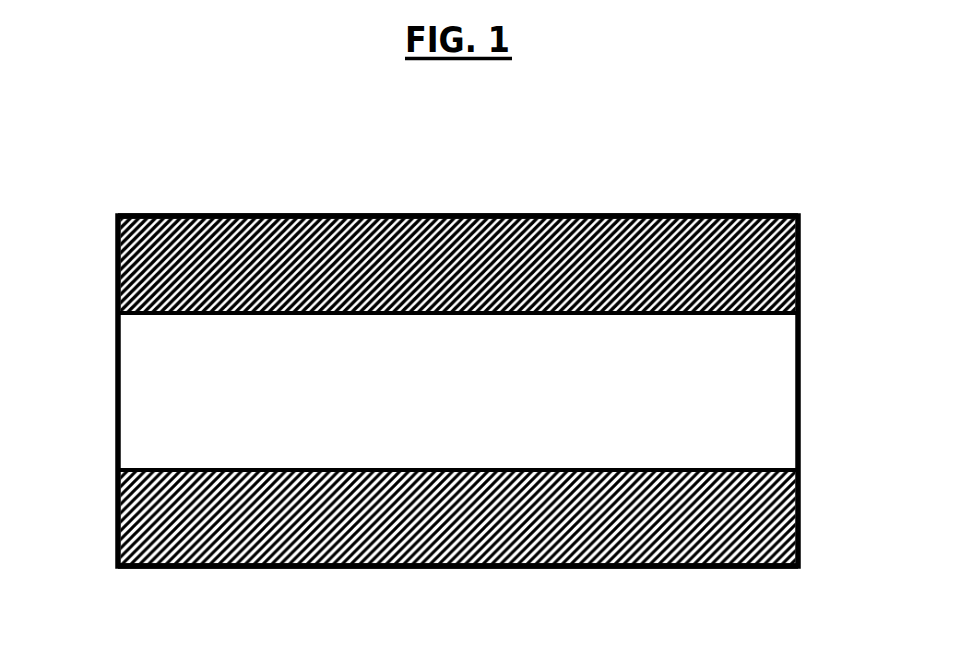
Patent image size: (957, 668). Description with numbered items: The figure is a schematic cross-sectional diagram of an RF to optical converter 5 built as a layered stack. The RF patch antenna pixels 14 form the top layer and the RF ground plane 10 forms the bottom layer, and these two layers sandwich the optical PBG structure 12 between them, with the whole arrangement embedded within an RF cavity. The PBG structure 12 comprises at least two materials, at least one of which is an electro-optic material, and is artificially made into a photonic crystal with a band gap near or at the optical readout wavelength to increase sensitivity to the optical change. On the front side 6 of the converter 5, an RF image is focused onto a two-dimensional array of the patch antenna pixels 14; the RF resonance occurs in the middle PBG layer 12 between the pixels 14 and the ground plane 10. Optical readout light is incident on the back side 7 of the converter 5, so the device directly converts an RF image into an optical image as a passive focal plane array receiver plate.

The RF to optical converter 5 is at (62, 320).
The front side 6 is at (493, 198).
The back side 7 is at (493, 584).
The RF patch antenna pixels 14 is at (797, 257).
The optical PBG structure 12 is at (798, 378).
The RF ground plane 10 is at (798, 510).